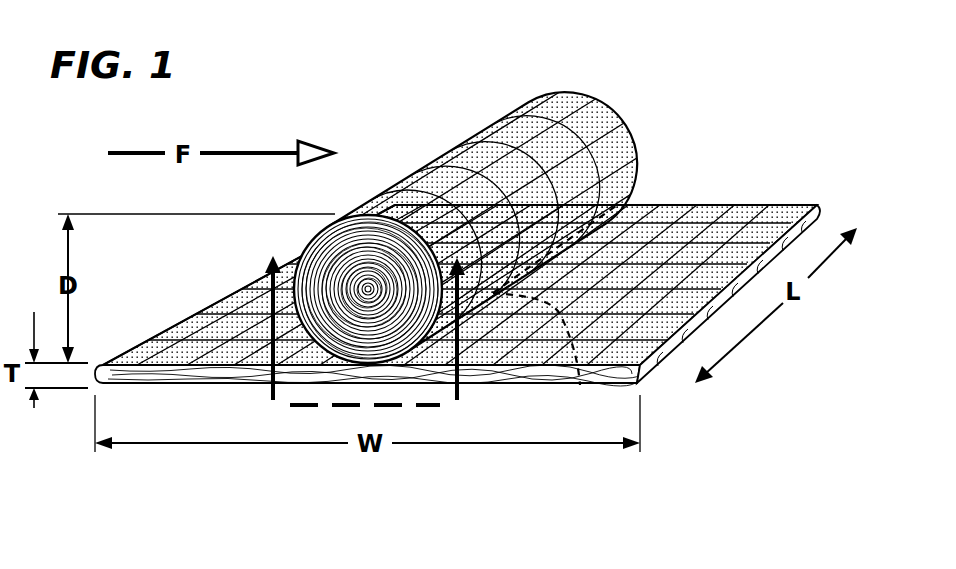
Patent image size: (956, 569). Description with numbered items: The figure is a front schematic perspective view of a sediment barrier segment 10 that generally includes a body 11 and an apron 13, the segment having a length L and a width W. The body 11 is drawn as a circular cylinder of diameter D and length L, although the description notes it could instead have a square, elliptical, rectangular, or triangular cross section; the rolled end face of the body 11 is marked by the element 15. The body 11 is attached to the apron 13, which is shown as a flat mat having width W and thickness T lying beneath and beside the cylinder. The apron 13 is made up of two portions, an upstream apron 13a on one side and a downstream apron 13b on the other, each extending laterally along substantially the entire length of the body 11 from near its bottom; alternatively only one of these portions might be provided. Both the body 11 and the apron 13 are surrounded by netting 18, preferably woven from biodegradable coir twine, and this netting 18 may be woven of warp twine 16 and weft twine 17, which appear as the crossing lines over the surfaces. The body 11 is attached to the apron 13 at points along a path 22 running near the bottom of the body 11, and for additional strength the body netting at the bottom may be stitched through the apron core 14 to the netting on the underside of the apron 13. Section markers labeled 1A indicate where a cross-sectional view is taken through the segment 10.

The sediment barrier segment 10 is at (369, 93).
The body 11 is at (583, 74).
The apron 13 is at (676, 181).
The upstream apron 13a is at (232, 300).
The downstream apron 13b is at (812, 205).
The apron core 14 is at (186, 383).
The innermost wrap of roll 15 is at (305, 243).
The warp twine 16 is at (700, 208).
The weft twine 17 is at (712, 302).
The netting 18 is at (503, 146).
The path 22 is at (579, 390).
The section line 1A- 1A is at (365, 349).